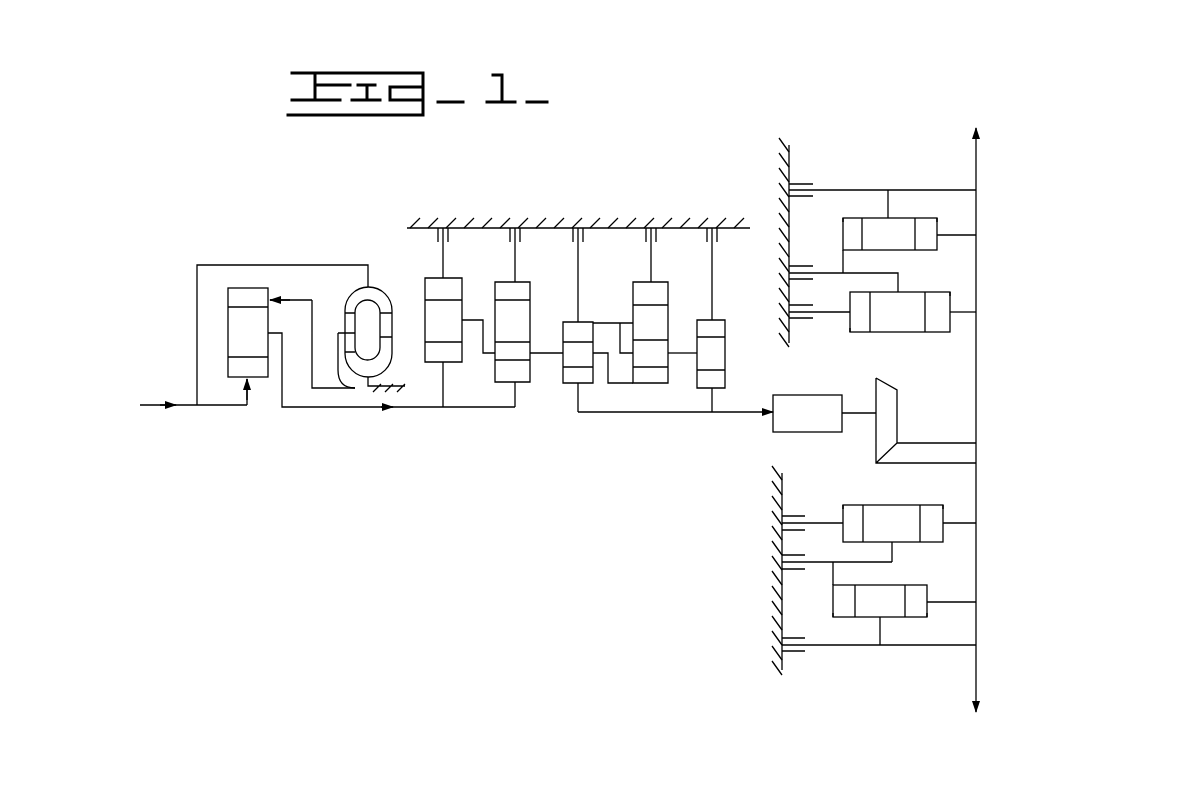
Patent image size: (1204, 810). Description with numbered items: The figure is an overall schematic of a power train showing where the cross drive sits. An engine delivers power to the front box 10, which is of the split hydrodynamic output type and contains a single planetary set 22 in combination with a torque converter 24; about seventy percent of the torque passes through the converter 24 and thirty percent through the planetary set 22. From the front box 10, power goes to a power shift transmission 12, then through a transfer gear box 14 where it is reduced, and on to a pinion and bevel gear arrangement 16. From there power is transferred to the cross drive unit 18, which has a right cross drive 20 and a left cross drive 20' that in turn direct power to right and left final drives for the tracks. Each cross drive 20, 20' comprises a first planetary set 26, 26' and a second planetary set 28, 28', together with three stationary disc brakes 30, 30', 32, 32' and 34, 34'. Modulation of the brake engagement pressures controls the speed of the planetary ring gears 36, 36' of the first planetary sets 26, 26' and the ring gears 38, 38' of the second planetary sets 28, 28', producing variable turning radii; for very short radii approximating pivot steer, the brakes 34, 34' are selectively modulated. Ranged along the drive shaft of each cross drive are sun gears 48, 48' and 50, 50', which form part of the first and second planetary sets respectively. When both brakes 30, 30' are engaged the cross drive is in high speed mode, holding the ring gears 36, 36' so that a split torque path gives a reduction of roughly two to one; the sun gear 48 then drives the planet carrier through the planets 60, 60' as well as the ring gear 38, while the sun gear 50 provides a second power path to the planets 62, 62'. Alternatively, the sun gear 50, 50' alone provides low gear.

The front box 10 is at (269, 250).
The power shift transmission 12 is at (559, 192).
The transfer gear box 14 is at (820, 423).
The pinion and bevel gear arrangement 16 is at (904, 436).
The cross drive unit 18 is at (1110, 387).
The right cross drive 20 is at (961, 242).
The left cross drive 20' is at (955, 570).
The planetary set 22 is at (193, 295).
The torque converter 24 is at (386, 278).
The first planetary set 26 is at (990, 339).
The first planetary set 26' is at (989, 503).
The second planetary set 28 is at (990, 259).
The second planetary set 28' is at (981, 582).
The stationary disc brake 30 is at (784, 302).
The stationary disc brake 30' is at (780, 520).
The stationary disc brake 32 is at (810, 271).
The stationary disc brake 32' is at (794, 563).
The stationary disc brake 34 is at (844, 177).
The stationary disc brake 34' is at (833, 640).
The planetary ring gear 36 is at (825, 338).
The planetary ring gear 36' is at (820, 492).
The planetary ring gear 38 is at (819, 215).
The planetary ring gear 38' is at (811, 624).
The sun gear 48 is at (934, 281).
The sun gear 48' is at (919, 491).
The sun gear 50 is at (955, 211).
The sun gear 50' is at (942, 627).
The planets 60 is at (900, 312).
The planets 60' is at (893, 523).
The planets 62 is at (890, 220).
The planets 62' is at (880, 601).